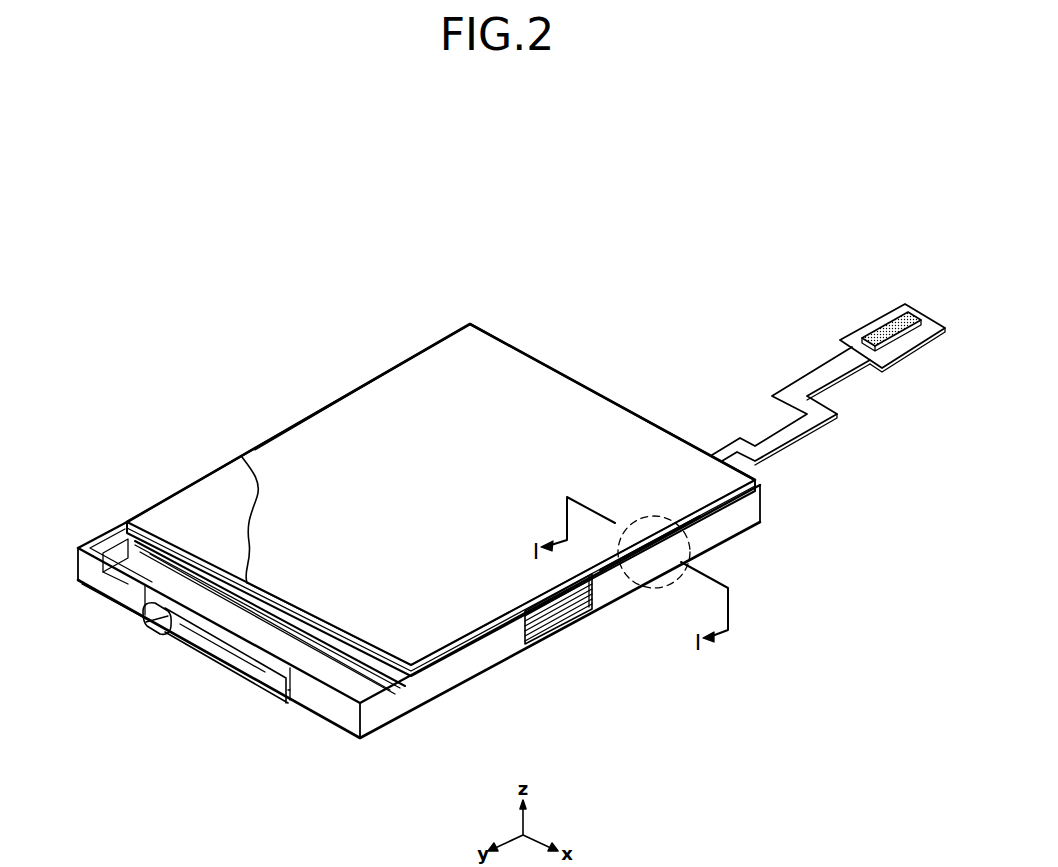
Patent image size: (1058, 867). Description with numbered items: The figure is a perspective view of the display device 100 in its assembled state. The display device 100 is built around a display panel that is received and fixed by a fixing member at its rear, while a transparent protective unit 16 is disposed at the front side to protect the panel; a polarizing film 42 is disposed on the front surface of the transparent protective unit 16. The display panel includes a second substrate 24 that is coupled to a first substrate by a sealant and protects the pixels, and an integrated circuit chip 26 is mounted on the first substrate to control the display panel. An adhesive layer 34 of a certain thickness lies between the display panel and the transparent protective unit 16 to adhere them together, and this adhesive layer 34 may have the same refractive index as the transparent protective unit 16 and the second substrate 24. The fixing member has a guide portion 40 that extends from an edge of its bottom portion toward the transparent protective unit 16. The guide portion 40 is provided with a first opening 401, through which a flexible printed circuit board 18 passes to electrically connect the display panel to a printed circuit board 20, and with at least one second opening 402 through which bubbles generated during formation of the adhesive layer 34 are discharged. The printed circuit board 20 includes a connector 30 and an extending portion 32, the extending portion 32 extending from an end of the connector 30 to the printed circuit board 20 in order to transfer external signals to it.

The display device 100 is at (421, 238).
The transparent protective unit 16 is at (194, 498).
The polarizing film 42 is at (571, 387).
The integrated circuit chip 26 is at (119, 560).
The first opening 401 is at (152, 633).
The flexible printed circuit board 18 is at (207, 652).
The second substrate 24 is at (274, 621).
The printed circuit board 20 is at (349, 735).
The guide portion 40 is at (411, 701).
The adhesive layer 34 is at (545, 614).
The second opening 402 is at (585, 600).
The extending portion 32 is at (794, 385).
The connector 30 is at (897, 320).